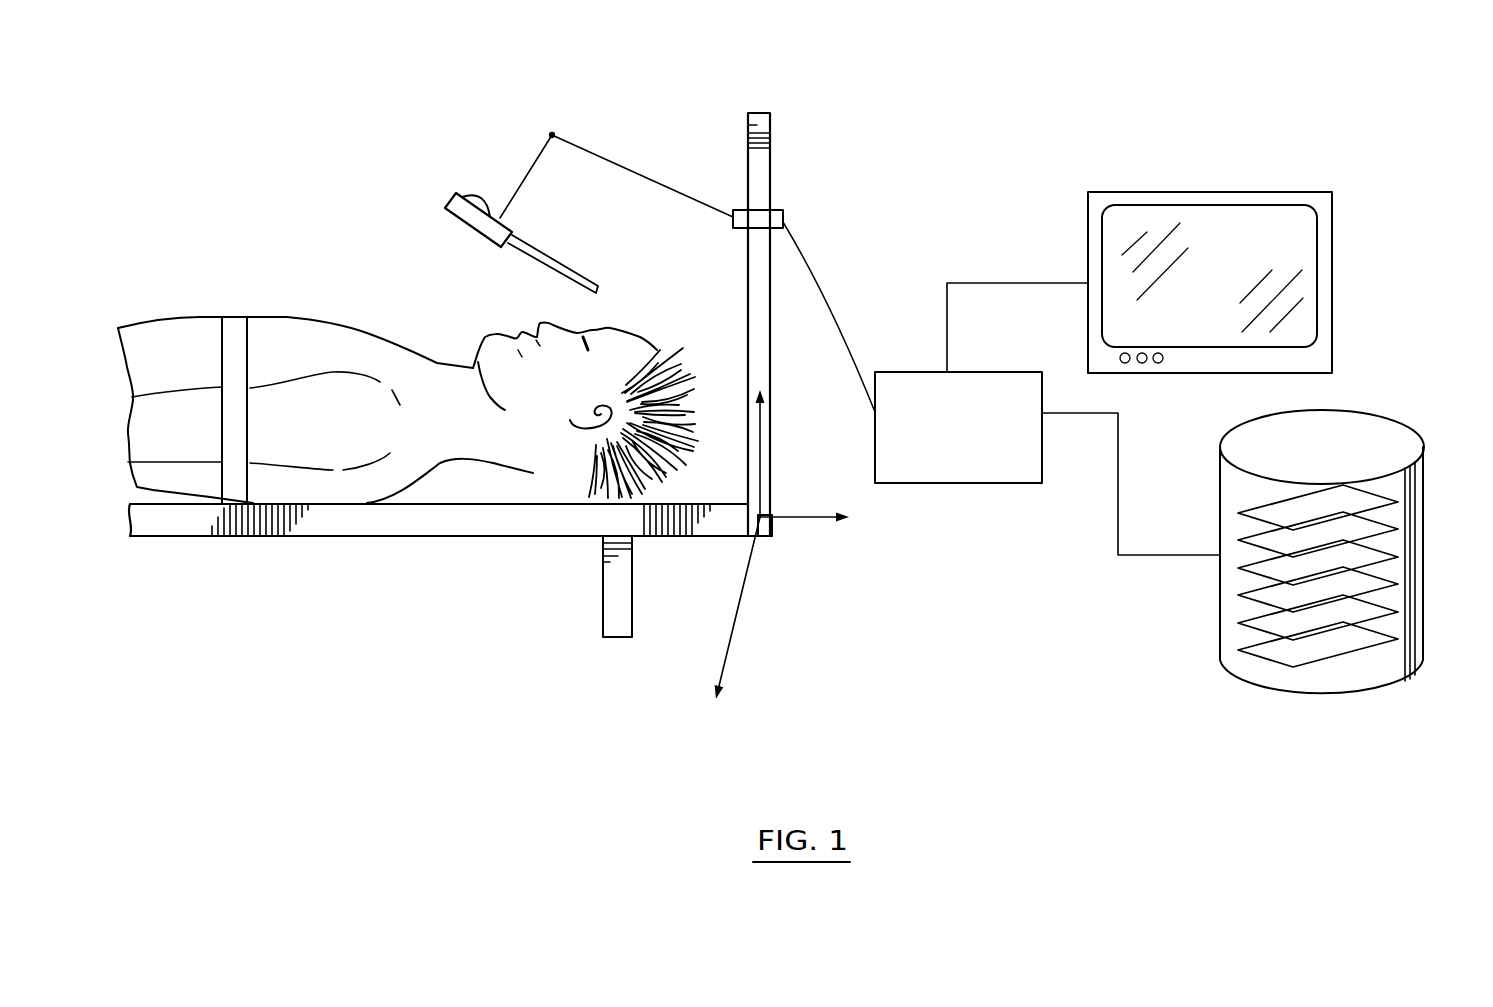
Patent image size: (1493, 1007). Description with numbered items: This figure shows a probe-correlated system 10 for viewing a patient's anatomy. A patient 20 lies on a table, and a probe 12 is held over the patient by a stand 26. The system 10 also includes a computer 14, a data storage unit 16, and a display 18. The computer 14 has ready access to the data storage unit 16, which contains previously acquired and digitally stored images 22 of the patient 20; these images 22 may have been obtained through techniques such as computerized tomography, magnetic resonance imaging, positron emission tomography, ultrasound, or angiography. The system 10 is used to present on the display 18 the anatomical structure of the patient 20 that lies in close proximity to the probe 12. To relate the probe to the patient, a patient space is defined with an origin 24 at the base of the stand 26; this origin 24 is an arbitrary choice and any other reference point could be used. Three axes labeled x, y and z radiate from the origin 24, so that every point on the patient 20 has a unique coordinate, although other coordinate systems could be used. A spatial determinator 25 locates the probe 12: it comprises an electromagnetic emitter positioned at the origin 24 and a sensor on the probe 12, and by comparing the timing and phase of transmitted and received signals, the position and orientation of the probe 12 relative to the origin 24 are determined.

The probe-correlated system 10 is at (305, 66).
The probe 12 is at (436, 223).
The computer 14 is at (1047, 419).
The data storage unit 16 is at (1208, 641).
The display 18 is at (1346, 281).
The patient 20 is at (208, 302).
The stored images 22 is at (1336, 676).
The origin 24 is at (752, 524).
The spatial determinator 25 is at (471, 179).
The stand 26 is at (728, 123).